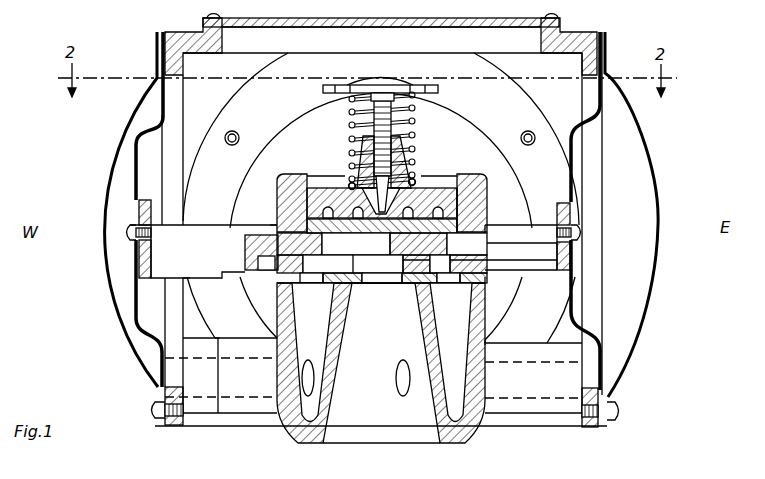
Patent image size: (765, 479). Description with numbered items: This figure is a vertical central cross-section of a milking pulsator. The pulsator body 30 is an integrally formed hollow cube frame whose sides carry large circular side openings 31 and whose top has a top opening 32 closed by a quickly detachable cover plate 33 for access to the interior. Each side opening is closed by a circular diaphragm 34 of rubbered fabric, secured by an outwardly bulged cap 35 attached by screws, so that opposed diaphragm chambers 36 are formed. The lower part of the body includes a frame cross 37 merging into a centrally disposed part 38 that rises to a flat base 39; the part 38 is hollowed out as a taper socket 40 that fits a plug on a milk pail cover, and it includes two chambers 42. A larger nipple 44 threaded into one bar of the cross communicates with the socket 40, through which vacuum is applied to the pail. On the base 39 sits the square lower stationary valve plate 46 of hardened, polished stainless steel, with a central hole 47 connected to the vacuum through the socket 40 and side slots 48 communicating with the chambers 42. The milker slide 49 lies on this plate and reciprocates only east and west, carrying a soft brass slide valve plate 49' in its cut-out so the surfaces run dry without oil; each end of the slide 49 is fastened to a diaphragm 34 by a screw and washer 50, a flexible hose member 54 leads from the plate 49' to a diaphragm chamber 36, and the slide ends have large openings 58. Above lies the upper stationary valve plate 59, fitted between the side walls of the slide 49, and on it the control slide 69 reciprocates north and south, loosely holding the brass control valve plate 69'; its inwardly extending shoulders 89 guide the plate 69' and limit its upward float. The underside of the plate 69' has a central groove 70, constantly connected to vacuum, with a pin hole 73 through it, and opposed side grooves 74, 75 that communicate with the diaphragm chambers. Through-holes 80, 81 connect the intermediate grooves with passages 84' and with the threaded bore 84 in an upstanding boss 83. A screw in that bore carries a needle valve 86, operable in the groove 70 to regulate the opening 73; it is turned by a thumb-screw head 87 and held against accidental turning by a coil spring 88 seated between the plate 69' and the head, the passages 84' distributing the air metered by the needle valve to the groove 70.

The pulsator body 30 is at (590, 34).
The side openings 31 is at (176, 85).
The top opening 32 is at (224, 40).
The cover plate 33 is at (412, 28).
The diaphragm 34 is at (160, 110).
The outwardly bulged caps 35 is at (113, 166).
The diaphragm chambers 36 is at (118, 207).
The frame cross 37 is at (262, 414).
The centrally disposed part 38 is at (492, 336).
The base 39 is at (490, 279).
The taper socket 40 is at (418, 433).
The chambers 42 is at (276, 322).
The larger nipple 44 is at (537, 407).
The lower stationary valve plate 46 is at (284, 278).
The central hole 47 is at (365, 278).
The side slots 48 is at (295, 288).
The milker slide 49 is at (202, 291).
The slide valve plate 49' is at (236, 214).
The screw and washer 50 is at (129, 234).
The flexible hose member 54 is at (540, 248).
The openings 58 is at (608, 271).
The upper stationary valve plate 59 is at (256, 250).
The control slide 69 is at (476, 191).
The control valve plate 69' is at (287, 189).
The groove 70 is at (487, 211).
The pin hole 73 is at (382, 264).
The side groove 74 is at (280, 210).
The side groove 75 is at (487, 235).
The through-hole 80 is at (382, 245).
The through-hole 81 is at (370, 265).
The upstanding boss 83 is at (393, 134).
The threaded bore 84 is at (381, 140).
The passages 84' is at (397, 180).
The needle valve 86 is at (401, 158).
The thumb-screw head 87 is at (437, 83).
The coil spring 88 is at (410, 102).
The shoulders 89 is at (310, 175).